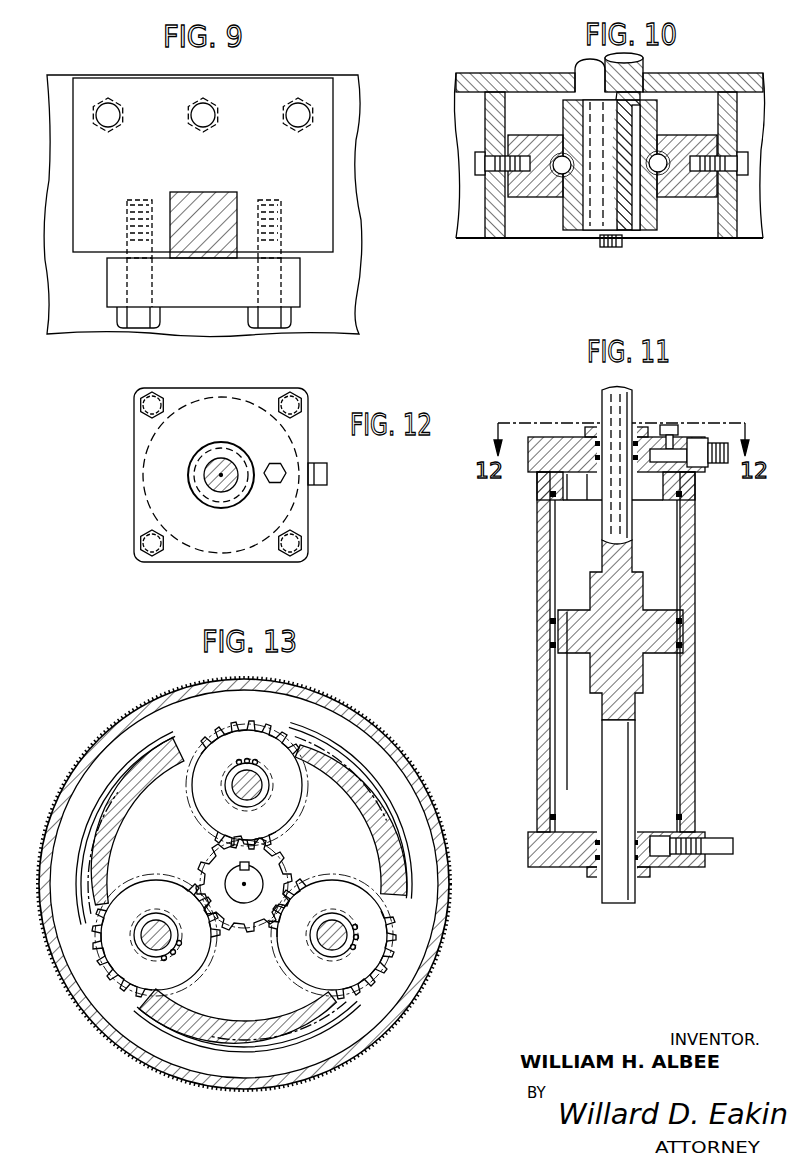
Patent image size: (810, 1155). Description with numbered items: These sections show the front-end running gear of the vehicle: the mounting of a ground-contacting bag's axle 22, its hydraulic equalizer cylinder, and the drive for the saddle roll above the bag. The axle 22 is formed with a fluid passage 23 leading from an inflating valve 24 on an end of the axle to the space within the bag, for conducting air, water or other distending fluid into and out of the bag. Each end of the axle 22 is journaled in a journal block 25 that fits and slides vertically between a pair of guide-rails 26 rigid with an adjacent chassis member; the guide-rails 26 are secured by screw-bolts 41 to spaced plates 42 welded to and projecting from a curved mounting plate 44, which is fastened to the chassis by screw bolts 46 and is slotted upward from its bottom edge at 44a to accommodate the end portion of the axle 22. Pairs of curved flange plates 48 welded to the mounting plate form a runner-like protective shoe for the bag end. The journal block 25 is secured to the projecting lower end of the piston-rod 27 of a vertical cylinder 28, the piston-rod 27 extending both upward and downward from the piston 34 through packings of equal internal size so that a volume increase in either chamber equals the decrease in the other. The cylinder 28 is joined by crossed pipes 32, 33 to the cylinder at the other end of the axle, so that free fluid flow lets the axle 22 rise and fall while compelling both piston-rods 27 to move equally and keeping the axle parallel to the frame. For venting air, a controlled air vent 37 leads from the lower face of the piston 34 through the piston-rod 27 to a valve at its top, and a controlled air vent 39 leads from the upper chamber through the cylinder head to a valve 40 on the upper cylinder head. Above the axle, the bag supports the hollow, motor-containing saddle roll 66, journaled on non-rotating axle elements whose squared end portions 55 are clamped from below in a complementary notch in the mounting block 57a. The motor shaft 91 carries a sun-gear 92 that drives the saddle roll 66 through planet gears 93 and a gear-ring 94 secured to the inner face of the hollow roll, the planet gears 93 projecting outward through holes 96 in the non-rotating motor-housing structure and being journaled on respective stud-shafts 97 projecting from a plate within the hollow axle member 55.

In FIG. 10, the axle 22 is at (643, 65).
In FIG. 10, the fluid passage 23 is at (618, 232).
In FIG. 10, the inflating valve 24 is at (606, 248).
In FIG. 10, the journal block 25 is at (680, 197).
In FIG. 10, the guide-rails 26 is at (522, 197).
In FIG. 11, the piston-rod 27 is at (633, 405).
In FIG. 12, the piston-rod 27 is at (215, 476).
In FIG. 11, the vertical cylinder 28 is at (696, 578).
In FIG. 12, the vertical cylinder 28 is at (145, 446).
In FIG. 11, the pipe 32 is at (718, 443).
In FIG. 12, the pipe 32 is at (322, 486).
In FIG. 11, the pipe 33 is at (725, 840).
In FIG. 11, the piston 34 is at (557, 636).
In FIG. 11, the controlled air vent 37 is at (643, 660).
In FIG. 12, the controlled air vent 37 is at (236, 457).
In FIG. 11, the controlled air vent 39 is at (686, 476).
In FIG. 11, the valve 40 is at (672, 426).
In FIG. 12, the valve 40 is at (279, 465).
In FIG. 10, the screw-bolts 41 is at (478, 168).
In FIG. 10, the spaced plates 42 is at (738, 118).
In FIG. 9, the curved mounting plate 44 is at (350, 304).
In FIG. 10, the curved mounting plate 44 is at (467, 93).
In FIG. 10, the vertical slot 44a is at (578, 72).
In FIG. 9, the screw bolts 46 is at (108, 113).
In FIG. 10, the curved flange plates 48 is at (491, 240).
In FIG. 9, the non-rotating axle element 55 is at (218, 200).
In FIG. 13, the non-rotating axle element 55 is at (270, 1038).
In FIG. 9, the mounting block 57a is at (271, 86).
In FIG. 13, the saddle roll 66 is at (452, 967).
In FIG. 13, the motor shaft 91 is at (241, 900).
In FIG. 13, the sun-gear 92 is at (271, 863).
In FIG. 13, the planet gears 93 is at (268, 742).
In FIG. 13, the gear-ring 94 is at (193, 732).
In FIG. 13, the holes 96 is at (183, 748).
In FIG. 13, the stud-shafts 97 is at (257, 788).